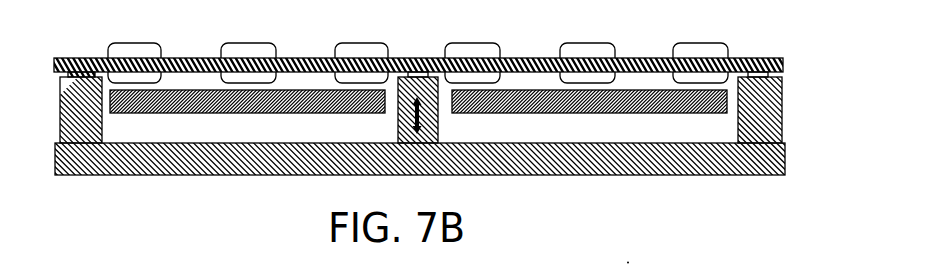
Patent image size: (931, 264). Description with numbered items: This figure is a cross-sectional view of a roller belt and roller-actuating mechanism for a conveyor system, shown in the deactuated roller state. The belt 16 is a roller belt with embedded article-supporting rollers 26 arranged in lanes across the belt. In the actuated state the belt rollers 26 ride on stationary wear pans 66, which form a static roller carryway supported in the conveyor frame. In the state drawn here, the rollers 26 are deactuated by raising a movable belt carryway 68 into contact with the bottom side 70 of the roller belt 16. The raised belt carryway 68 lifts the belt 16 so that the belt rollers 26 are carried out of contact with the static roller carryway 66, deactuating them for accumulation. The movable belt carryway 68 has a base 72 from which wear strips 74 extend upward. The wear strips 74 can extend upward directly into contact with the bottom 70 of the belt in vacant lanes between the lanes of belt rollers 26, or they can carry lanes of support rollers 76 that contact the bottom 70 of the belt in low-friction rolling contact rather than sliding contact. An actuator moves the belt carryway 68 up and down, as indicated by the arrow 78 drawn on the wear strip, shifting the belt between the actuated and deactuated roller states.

The belt 16 is at (87, 58).
The article-supporting rollers 26 is at (148, 44).
The bottom side 70 is at (101, 78).
The support rollers 76 is at (762, 58).
The stationary wear pans 66 is at (296, 112).
The movable belt carryway 68 is at (188, 168).
The base 72 is at (528, 164).
The wear strips 74 is at (438, 120).
The arrow 78 is at (410, 116).